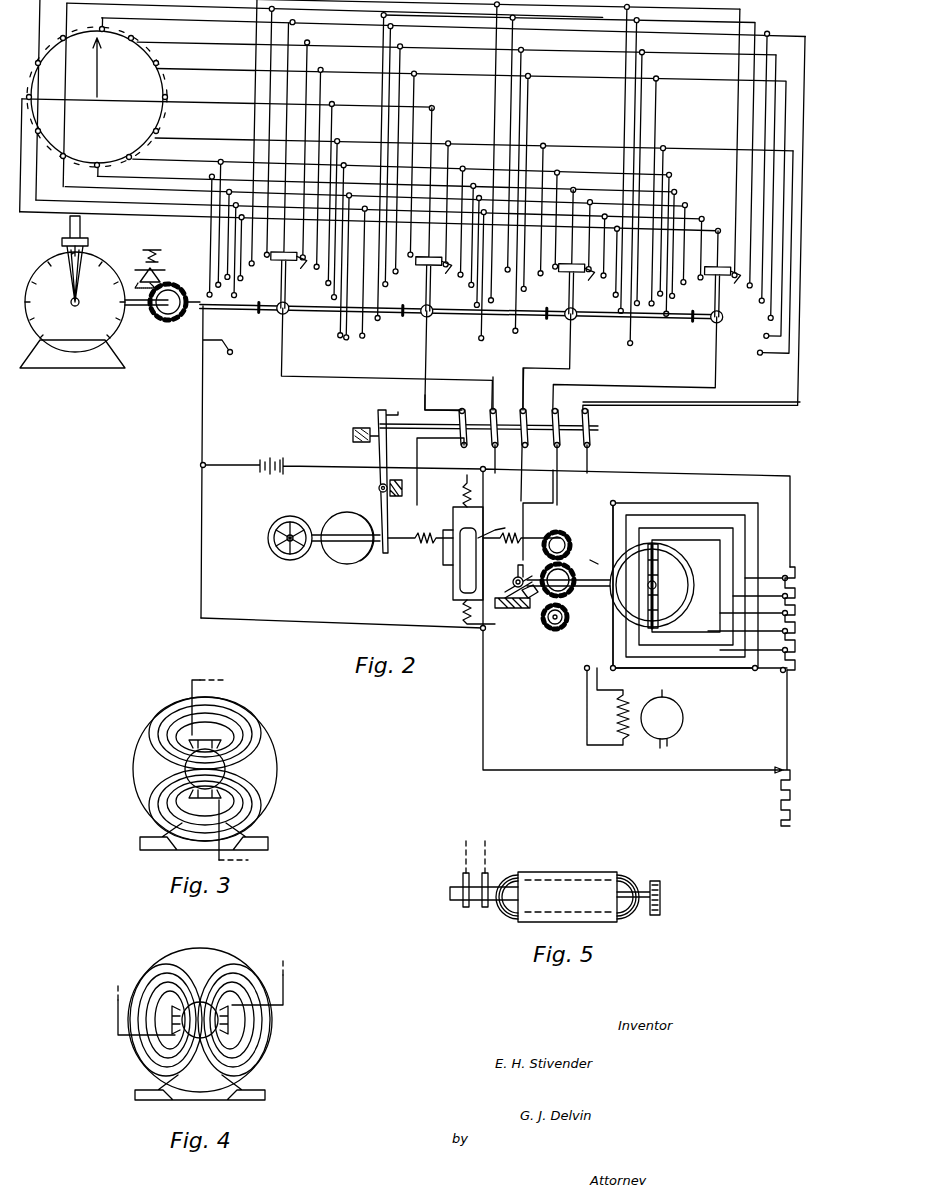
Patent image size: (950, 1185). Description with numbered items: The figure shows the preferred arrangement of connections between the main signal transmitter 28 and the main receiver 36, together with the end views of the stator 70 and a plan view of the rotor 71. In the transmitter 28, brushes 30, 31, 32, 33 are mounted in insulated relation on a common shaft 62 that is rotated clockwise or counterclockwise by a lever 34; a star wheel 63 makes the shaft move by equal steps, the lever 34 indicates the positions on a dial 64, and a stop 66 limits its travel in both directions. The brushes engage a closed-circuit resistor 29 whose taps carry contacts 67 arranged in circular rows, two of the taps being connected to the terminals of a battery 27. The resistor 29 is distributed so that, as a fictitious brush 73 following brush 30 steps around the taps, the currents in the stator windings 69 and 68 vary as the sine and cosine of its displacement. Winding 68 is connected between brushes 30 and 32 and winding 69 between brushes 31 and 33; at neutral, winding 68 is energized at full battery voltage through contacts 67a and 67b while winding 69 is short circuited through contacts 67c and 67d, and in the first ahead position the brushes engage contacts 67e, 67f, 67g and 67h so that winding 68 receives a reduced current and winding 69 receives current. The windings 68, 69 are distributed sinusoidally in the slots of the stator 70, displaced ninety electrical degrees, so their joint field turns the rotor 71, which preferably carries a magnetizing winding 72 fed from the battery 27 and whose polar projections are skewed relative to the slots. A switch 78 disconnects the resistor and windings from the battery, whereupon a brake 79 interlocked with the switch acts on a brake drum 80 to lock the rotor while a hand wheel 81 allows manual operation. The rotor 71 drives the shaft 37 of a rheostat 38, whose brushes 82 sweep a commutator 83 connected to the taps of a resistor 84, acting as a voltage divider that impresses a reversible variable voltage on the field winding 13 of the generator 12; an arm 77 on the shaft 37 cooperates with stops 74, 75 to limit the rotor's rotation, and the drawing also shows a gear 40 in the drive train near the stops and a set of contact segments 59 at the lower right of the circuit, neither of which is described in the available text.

In FIG. 2, the direct current generator 12 is at (662, 725).
In FIG. 2, the field winding 13 is at (628, 740).
In FIG. 2, the battery 27 is at (275, 478).
In FIG. 2, the transmitter 28 is at (356, 361).
In FIG. 2, the resistor 29 is at (170, 90).
In FIG. 2, the brush 30 is at (279, 303).
In FIG. 2, the brush 31 is at (423, 304).
In FIG. 2, the brush 32 is at (566, 304).
In FIG. 2, the brush 33 is at (712, 304).
In FIG. 2, the lever 34 is at (82, 224).
In FIG. 2, the receiver 36 is at (470, 617).
In FIG. 2, the shaft 37 is at (568, 564).
In FIG. 2, the rheostat 38 is at (713, 503).
In FIG. 2, the gear 40 is at (566, 628).
In FIG. 2, the contact segments 59 is at (780, 800).
In FIG. 2, the shaft 62 is at (186, 318).
In FIG. 2, the star wheel 63 is at (165, 322).
In FIG. 2, the dial 64 is at (52, 252).
In FIG. 2, the stop 66 is at (85, 368).
In FIG. 2, the contacts 67 is at (240, 345).
In FIG. 2, the contact 67a is at (275, 254).
In FIG. 2, the contact 67b is at (563, 260).
In FIG. 2, the contact 67c is at (420, 256).
In FIG. 2, the contact 67d is at (709, 260).
In FIG. 2, the contact 67e is at (304, 270).
In FIG. 2, the contact 67f is at (592, 283).
In FIG. 2, the contact 67g is at (450, 277).
In FIG. 2, the contact 67h is at (743, 291).
In FIG. 2, the stator winding 68 is at (462, 490).
In FIG. 3, the stator winding 68 is at (262, 740).
In FIG. 2, the stator winding 69 is at (433, 530).
In FIG. 4, the stator winding 69 is at (155, 970).
In FIG. 3, the stator 70 is at (278, 760).
In FIG. 4, the stator 70 is at (218, 950).
In FIG. 2, the rotor 71 is at (470, 527).
In FIG. 5, the rotor 71 is at (608, 865).
In FIG. 2, the magnetizing winding 72 is at (496, 526).
In FIG. 5, the magnetizing winding 72 is at (625, 876).
In FIG. 2, the fictitious brush 73 is at (100, 78).
In FIG. 2, the stop 74 is at (505, 610).
In FIG. 2, the stop 75 is at (530, 600).
In FIG. 2, the arm 77 is at (512, 580).
In FIG. 2, the switch 78 is at (590, 426).
In FIG. 2, the brake 79 is at (378, 452).
In FIG. 2, the brake drum 80 is at (342, 564).
In FIG. 2, the hand wheel 81 is at (278, 558).
In FIG. 2, the brushes 82 is at (662, 578).
In FIG. 2, the commutator 83 is at (662, 596).
In FIG. 2, the resistor 84 is at (785, 565).